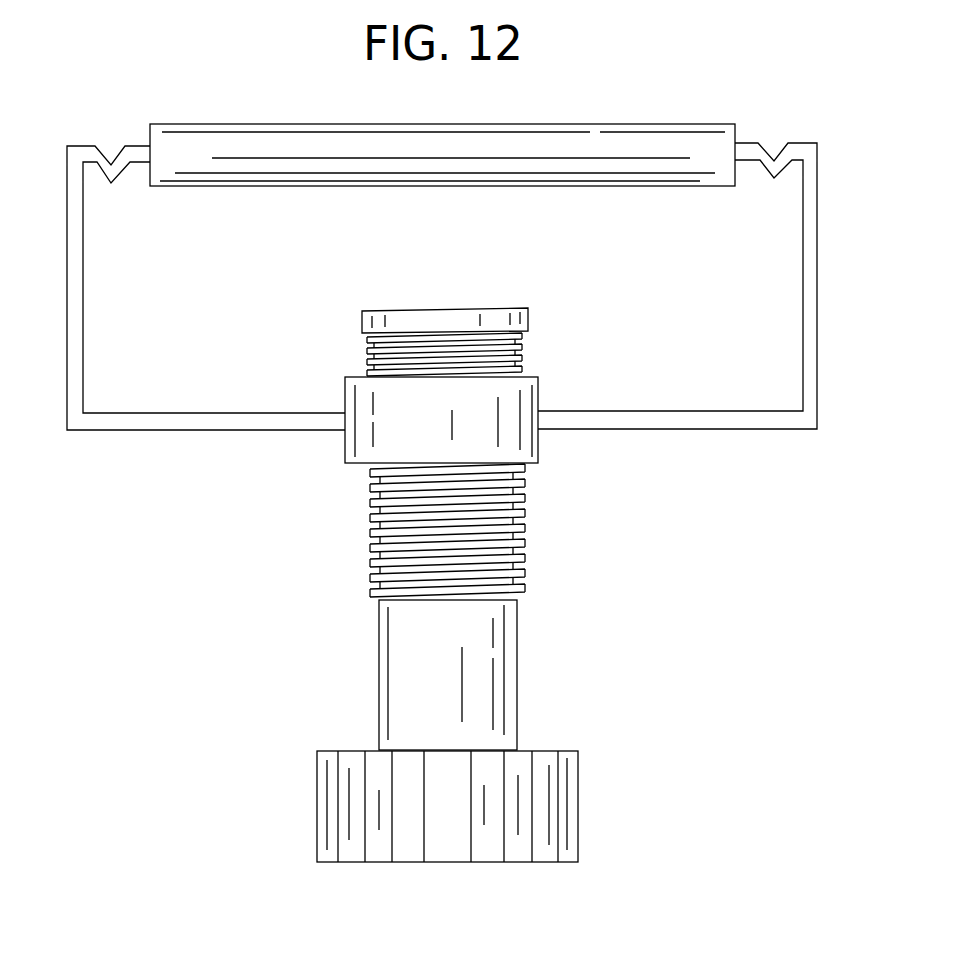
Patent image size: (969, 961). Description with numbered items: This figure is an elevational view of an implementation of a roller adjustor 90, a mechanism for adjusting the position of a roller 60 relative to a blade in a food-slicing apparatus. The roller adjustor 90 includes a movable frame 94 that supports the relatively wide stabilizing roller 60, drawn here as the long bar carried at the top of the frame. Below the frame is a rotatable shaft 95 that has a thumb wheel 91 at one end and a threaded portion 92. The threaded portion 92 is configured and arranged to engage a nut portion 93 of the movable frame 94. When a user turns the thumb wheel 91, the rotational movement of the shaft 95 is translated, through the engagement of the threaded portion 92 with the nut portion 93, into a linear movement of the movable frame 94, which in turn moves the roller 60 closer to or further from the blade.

The roller 60 is at (610, 124).
The roller adjustor 90 is at (816, 72).
The thumb wheel 91 is at (317, 845).
The threaded portion 92 is at (548, 352).
The nut portion 93 is at (345, 462).
The movable frame 94 is at (817, 158).
The rotatable shaft 95 is at (485, 685).